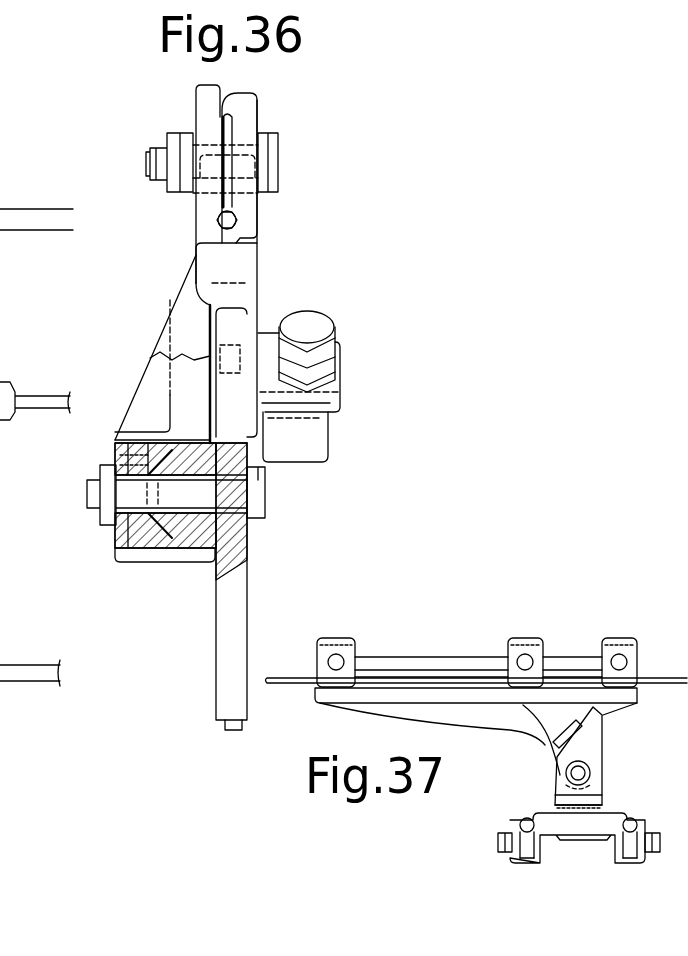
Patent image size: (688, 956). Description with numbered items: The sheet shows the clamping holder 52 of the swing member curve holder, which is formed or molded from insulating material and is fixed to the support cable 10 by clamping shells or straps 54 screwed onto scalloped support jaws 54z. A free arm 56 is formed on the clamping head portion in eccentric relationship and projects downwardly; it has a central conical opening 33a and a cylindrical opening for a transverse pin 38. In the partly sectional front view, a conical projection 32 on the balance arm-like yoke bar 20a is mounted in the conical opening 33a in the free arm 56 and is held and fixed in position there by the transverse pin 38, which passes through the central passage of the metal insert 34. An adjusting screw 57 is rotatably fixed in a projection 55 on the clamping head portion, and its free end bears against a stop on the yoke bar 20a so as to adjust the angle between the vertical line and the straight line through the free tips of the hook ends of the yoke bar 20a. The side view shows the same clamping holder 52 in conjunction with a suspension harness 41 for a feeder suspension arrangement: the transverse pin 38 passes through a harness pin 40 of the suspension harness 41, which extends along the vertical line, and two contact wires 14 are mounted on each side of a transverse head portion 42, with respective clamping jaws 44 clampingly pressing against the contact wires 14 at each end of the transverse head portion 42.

In FIG. 36, the support cable 10 is at (0, 195).
In FIG. 37, the support cable 10 is at (658, 680).
In FIG. 37, the contact wire 14 is at (527, 818).
In FIG. 36, the yoke bar 20a is at (255, 594).
In FIG. 36, the conical projection 32 is at (175, 566).
In FIG. 36, the conical opening 33a is at (130, 536).
In FIG. 36, the metal insert 34 is at (115, 456).
In FIG. 36, the transverse pin 38 is at (258, 502).
In FIG. 37, the transverse pin 38 is at (598, 771).
In FIG. 37, the harness pin 40 is at (605, 800).
In FIG. 37, the suspension harness 41 is at (490, 836).
In FIG. 37, the transverse head portion 42 is at (538, 860).
In FIG. 37, the clamping jaw 44 is at (508, 862).
In FIG. 36, the clamping holder 52 is at (155, 588).
In FIG. 37, the clamping holder 52 is at (600, 712).
In FIG. 36, the clamping shell or strap 54 is at (248, 104).
In FIG. 37, the clamping shell or strap 54 is at (345, 649).
In FIG. 36, the scalloped support jaw 54z is at (206, 106).
In FIG. 36, the projection 55 is at (335, 396).
In FIG. 37, the projection 55 is at (558, 740).
In FIG. 36, the free arm 56 is at (150, 387).
In FIG. 37, the free arm 56 is at (588, 745).
In FIG. 36, the adjusting screw 57 is at (314, 322).